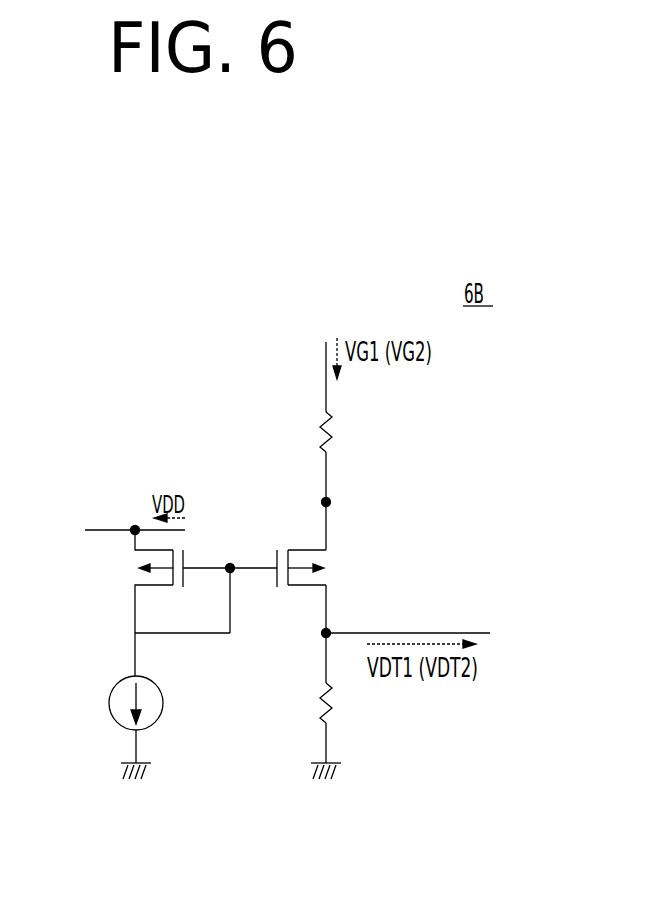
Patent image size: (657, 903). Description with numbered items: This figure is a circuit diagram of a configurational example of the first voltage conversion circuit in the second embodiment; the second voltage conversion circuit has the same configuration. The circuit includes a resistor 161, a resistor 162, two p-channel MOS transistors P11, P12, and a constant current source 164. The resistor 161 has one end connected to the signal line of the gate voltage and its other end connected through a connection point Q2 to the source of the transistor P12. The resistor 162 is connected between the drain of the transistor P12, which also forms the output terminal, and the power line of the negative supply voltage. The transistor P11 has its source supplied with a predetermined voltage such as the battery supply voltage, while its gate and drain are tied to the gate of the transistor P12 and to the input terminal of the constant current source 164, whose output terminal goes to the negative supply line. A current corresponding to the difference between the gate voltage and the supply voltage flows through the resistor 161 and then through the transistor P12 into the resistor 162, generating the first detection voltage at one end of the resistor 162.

The resistor 161 is at (318, 443).
The resistor 162 is at (315, 710).
The constant current source 164 is at (109, 704).
The transistor P11 is at (160, 586).
The transistor P12 is at (305, 548).
The connection point Q2 is at (331, 502).